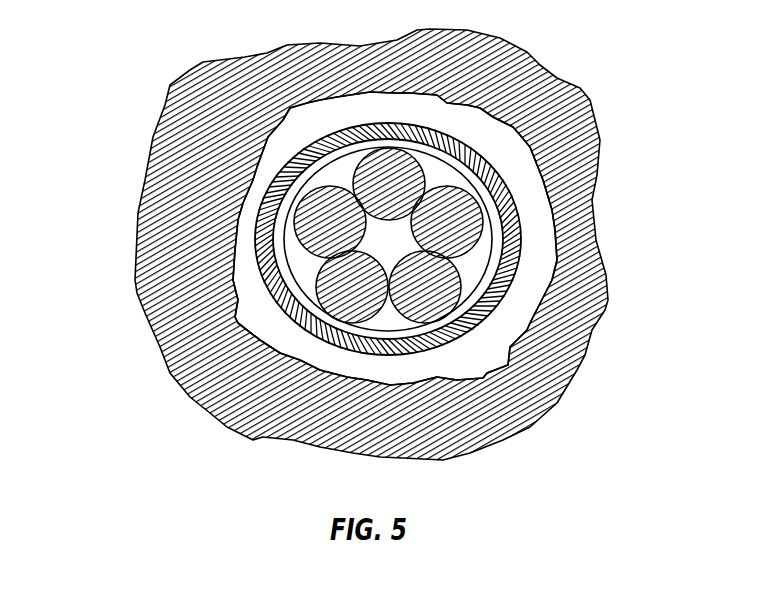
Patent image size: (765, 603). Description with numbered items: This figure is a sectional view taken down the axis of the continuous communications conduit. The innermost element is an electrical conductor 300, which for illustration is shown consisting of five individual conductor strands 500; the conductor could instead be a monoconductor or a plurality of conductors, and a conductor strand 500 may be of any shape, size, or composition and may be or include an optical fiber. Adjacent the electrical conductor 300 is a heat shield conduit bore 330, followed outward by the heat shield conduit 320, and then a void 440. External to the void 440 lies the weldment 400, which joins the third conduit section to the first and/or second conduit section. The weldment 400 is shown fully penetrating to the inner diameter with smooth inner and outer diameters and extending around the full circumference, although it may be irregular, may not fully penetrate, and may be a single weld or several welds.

The weldment 400 is at (200, 83).
The void 440 is at (245, 220).
The electrical conductor 300 is at (466, 285).
The heat shield conduit bore 330 is at (457, 162).
The heat shield conduit 320 is at (488, 173).
The conductor strand 500 is at (432, 295).